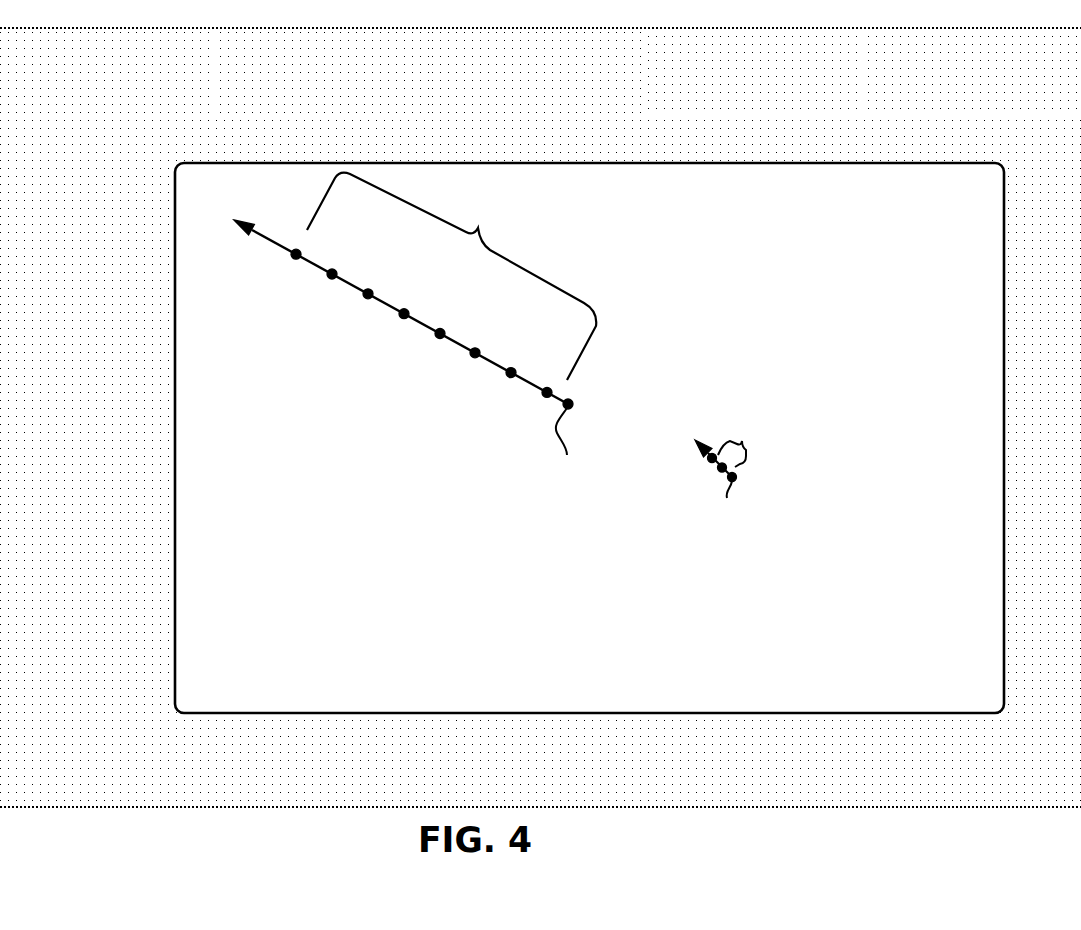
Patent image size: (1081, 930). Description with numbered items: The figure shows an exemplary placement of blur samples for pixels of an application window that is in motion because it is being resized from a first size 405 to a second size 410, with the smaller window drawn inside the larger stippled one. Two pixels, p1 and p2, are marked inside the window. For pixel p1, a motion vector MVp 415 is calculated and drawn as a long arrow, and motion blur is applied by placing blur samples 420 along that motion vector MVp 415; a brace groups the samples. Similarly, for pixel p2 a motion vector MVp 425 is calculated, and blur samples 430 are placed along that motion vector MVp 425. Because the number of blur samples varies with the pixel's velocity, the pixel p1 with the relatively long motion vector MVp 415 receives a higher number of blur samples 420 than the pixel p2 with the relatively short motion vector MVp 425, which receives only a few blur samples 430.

The first size 405 is at (589, 438).
The second size 410 is at (540, 417).
The motion vector MVp 415 is at (405, 355).
The blur samples 420 is at (469, 285).
The motion vector MVp 425 is at (694, 483).
The blur samples 430 is at (778, 429).